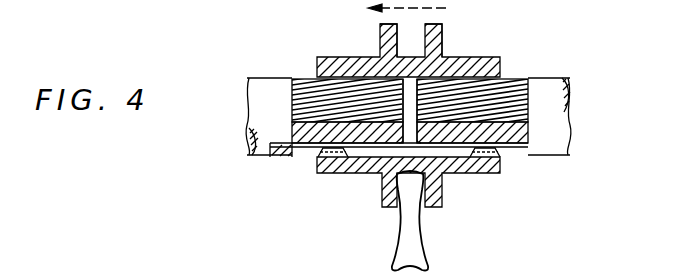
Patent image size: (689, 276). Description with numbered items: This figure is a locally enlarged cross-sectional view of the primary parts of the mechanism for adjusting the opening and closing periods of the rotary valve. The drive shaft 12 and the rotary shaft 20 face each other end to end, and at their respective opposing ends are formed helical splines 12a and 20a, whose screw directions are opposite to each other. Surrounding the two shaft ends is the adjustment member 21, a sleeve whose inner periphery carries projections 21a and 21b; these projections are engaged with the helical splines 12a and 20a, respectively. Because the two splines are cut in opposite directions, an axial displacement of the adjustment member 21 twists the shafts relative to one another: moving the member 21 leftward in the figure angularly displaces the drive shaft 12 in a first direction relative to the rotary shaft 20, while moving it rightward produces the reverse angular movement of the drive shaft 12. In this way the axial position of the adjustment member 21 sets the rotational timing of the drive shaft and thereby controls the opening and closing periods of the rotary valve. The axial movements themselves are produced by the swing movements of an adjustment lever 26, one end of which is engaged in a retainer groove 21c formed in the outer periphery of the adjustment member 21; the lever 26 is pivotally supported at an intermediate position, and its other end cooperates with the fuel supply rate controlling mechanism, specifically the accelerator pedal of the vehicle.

The drive shaft 12 is at (545, 90).
The helical spline 12a is at (512, 92).
The rotary shaft 20 is at (262, 92).
The helical spline 20a is at (302, 92).
The adjustment member 21 is at (479, 64).
The projection 21a is at (332, 152).
The projection 21b is at (485, 152).
The retainer groove 21c is at (420, 38).
The adjustment lever 26 is at (420, 232).